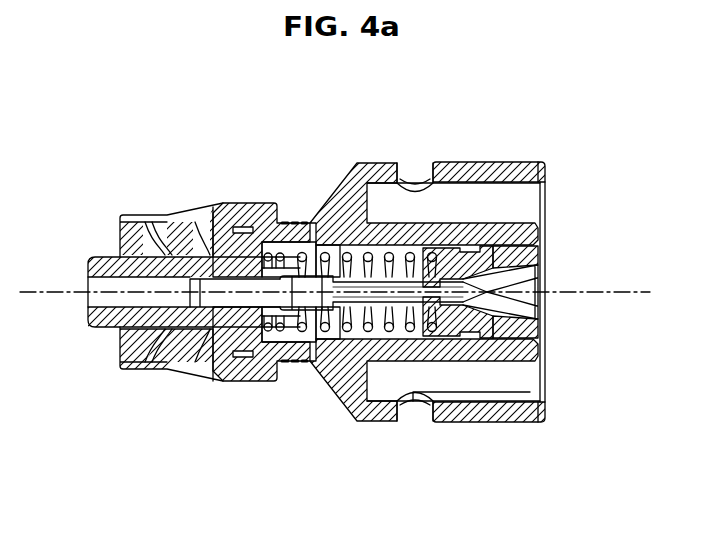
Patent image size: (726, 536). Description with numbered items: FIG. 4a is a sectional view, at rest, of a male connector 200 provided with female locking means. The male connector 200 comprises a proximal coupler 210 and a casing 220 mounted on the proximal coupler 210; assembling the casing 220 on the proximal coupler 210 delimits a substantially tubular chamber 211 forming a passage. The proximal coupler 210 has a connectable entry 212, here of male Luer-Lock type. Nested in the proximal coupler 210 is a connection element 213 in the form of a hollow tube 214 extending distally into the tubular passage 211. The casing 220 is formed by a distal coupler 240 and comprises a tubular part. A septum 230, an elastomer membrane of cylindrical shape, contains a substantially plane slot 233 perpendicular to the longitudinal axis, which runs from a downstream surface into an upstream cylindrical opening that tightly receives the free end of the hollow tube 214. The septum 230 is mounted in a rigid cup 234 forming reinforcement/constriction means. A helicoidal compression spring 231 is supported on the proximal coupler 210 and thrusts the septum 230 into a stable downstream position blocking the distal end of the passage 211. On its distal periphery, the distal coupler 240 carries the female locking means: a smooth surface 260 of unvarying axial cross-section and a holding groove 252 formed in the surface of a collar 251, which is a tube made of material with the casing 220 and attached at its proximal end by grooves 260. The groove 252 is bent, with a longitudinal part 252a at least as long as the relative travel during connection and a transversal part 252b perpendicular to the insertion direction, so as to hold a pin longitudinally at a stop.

The male connector 200 is at (251, 128).
The proximal coupler 210 is at (152, 222).
The substantially tubular chamber 211 is at (342, 395).
The connectable entry 212 is at (133, 347).
The connection element 213 is at (268, 318).
The hollow tube 214 is at (436, 298).
The casing 220 is at (530, 209).
The septum 230 is at (485, 265).
The spring 231 is at (390, 268).
The slot 233 is at (515, 283).
The rigid cup 234 is at (548, 163).
The distal coupler 240 is at (500, 172).
The collar 251 is at (487, 415).
The groove 252 is at (418, 176).
The longitudinal part 252a is at (500, 373).
The transversal part 252b is at (412, 428).
The smooth surface 260 is at (465, 203).